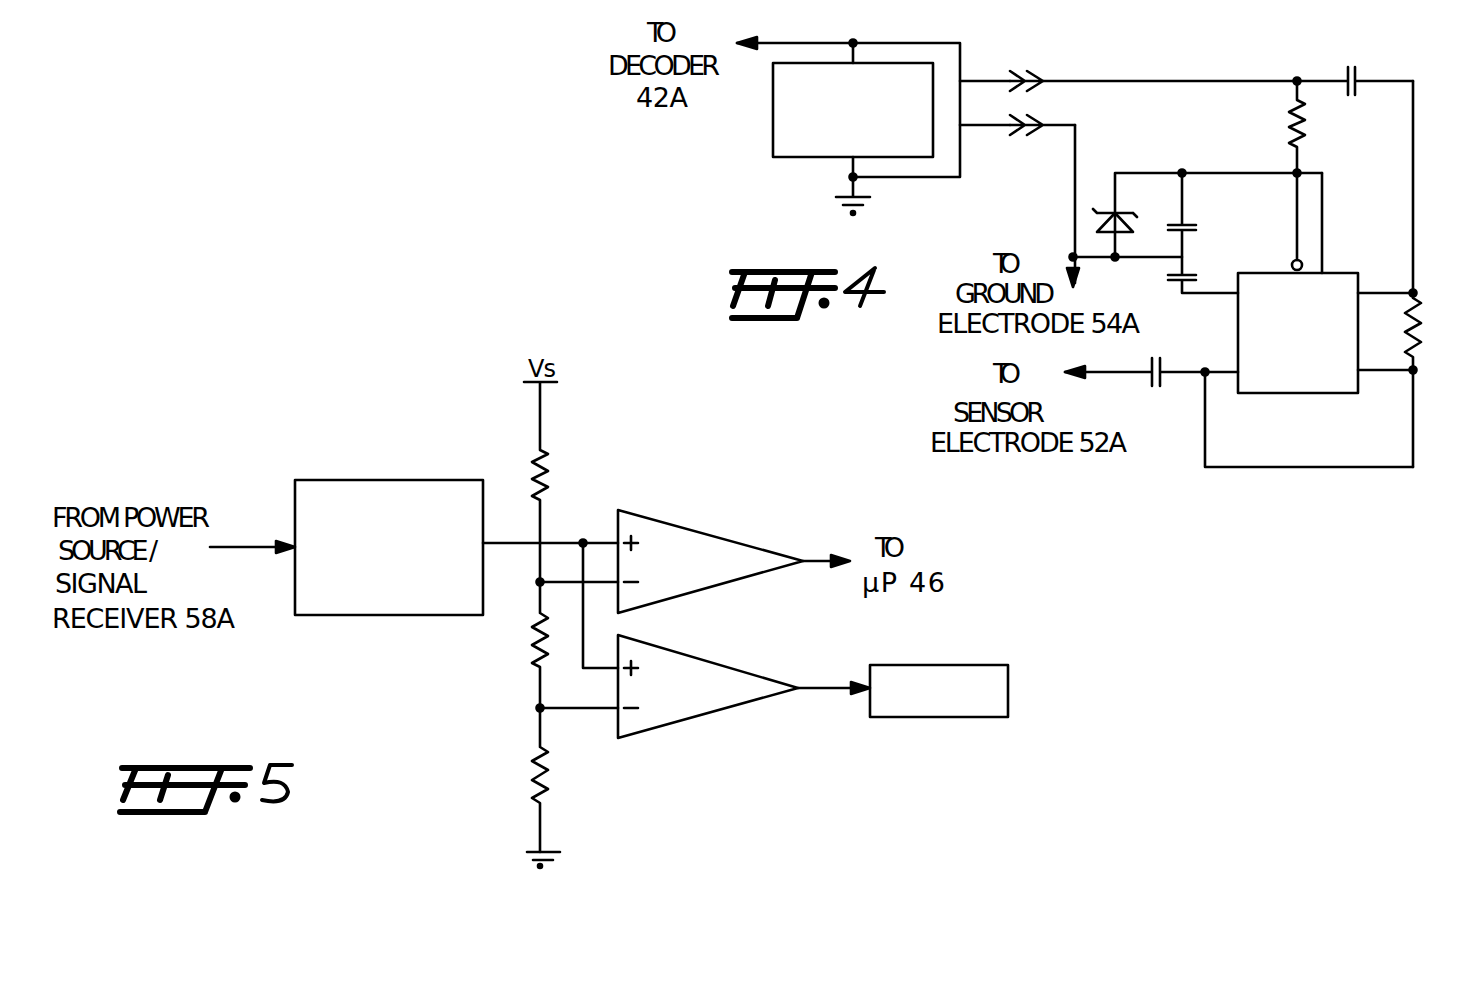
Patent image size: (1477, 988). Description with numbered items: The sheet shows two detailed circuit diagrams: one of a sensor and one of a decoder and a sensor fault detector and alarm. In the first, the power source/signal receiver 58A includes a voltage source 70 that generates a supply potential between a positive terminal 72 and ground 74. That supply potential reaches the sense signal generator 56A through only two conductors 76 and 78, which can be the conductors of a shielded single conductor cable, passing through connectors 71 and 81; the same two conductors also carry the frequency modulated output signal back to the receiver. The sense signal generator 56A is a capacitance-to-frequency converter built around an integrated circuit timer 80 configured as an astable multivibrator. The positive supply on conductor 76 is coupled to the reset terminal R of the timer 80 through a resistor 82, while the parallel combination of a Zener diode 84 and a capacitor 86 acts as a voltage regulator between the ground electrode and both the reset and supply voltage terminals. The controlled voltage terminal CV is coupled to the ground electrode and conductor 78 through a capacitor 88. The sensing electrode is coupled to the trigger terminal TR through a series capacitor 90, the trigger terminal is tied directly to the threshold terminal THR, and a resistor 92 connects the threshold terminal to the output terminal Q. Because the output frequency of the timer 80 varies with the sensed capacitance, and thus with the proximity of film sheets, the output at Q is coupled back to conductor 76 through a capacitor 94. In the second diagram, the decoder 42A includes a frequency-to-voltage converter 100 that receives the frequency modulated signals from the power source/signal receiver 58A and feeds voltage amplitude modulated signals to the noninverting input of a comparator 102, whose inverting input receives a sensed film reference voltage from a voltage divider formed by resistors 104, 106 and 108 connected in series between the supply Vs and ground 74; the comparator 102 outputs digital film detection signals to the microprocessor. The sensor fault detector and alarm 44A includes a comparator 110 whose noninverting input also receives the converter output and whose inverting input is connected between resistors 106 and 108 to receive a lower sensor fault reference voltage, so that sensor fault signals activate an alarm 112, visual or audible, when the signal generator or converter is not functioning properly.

In FIG. 4, the voltage source 70 is at (773, 122).
In FIG. 4, the positive terminal 72 is at (858, 62).
In FIG. 4, the ground 74 is at (850, 180).
In FIG. 5, the ground 74 is at (560, 851).
In FIG. 4, the conductor 76 is at (986, 89).
In FIG. 4, the conductor 78 is at (1004, 130).
In FIG. 4, the connector 71 is at (1044, 79).
In FIG. 4, the connector 81 is at (1046, 121).
In FIG. 4, the power source/signal receiver 58A is at (983, 62).
In FIG. 4, the sense signal generator 56A is at (1233, 64).
In FIG. 4, the capacitor 94 is at (1360, 70).
In FIG. 4, the resistor 82 is at (1305, 125).
In FIG. 4, the Zener diode 84 is at (1104, 224).
In FIG. 4, the capacitor 86 is at (1190, 222).
In FIG. 4, the capacitor 88 is at (1190, 272).
In FIG. 4, the integrated circuit timer 80 is at (1290, 394).
In FIG. 4, the resistor 92 is at (1415, 304).
In FIG. 4, the capacitor 90 is at (1163, 386).
In FIG. 5, the frequency-to-voltage converter 100 is at (375, 480).
In FIG. 5, the resistor 104 is at (548, 456).
In FIG. 5, the resistor 106 is at (538, 641).
In FIG. 5, the resistor 108 is at (548, 795).
In FIG. 5, the comparator 102 is at (700, 531).
In FIG. 5, the comparator 110 is at (707, 661).
In FIG. 5, the alarm 112 is at (950, 665).
In FIG. 5, the decoder 42A is at (437, 664).
In FIG. 5, the sensor fault detector and alarm 44A is at (512, 748).